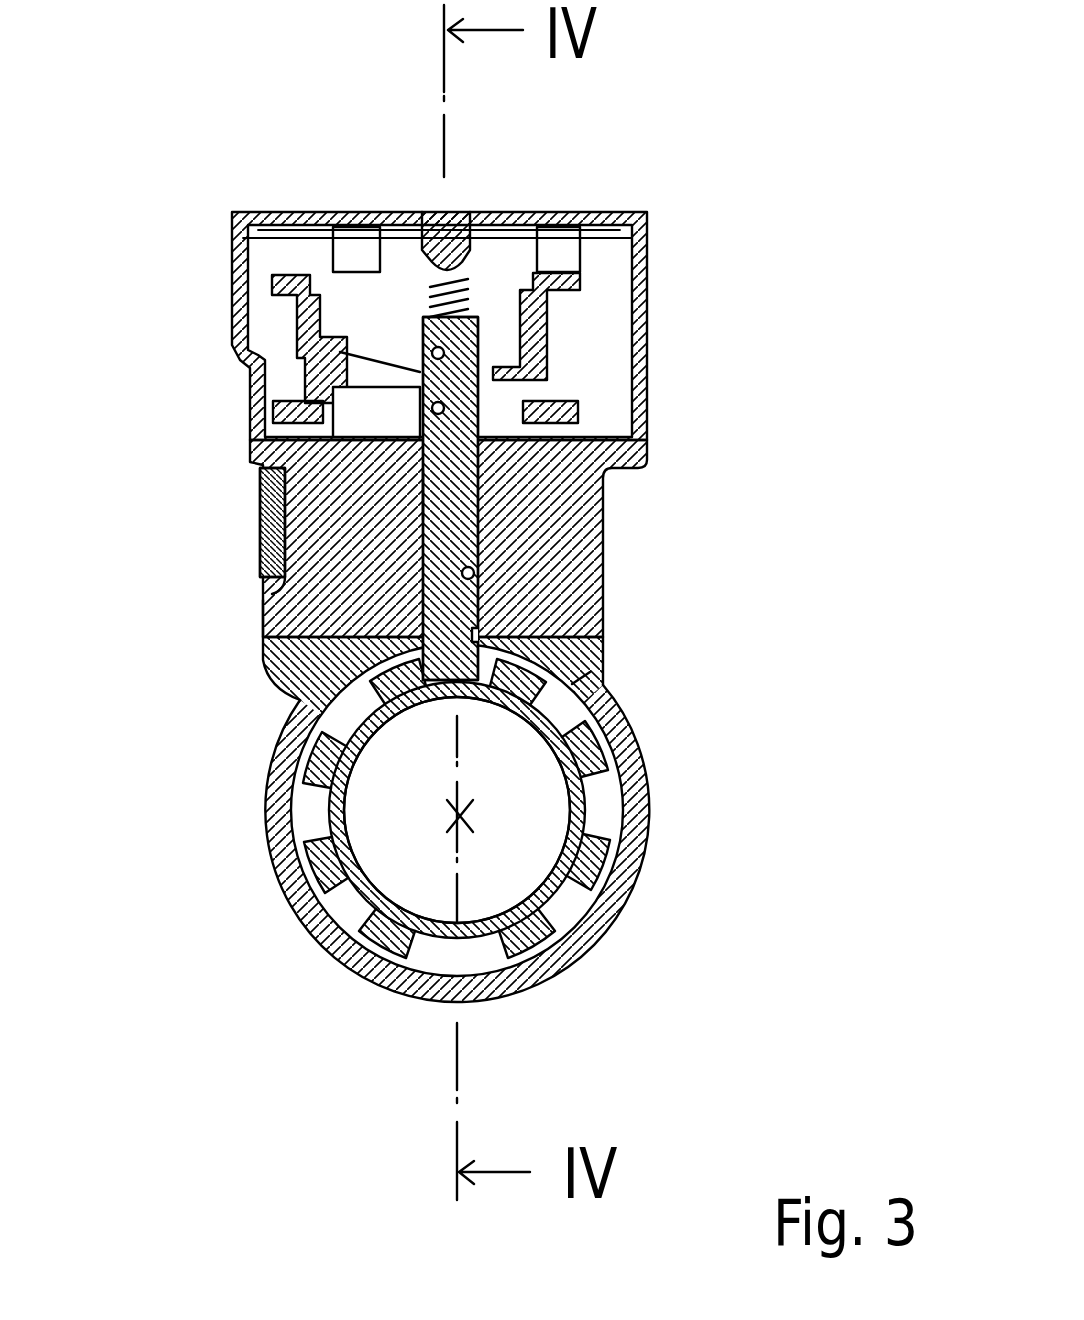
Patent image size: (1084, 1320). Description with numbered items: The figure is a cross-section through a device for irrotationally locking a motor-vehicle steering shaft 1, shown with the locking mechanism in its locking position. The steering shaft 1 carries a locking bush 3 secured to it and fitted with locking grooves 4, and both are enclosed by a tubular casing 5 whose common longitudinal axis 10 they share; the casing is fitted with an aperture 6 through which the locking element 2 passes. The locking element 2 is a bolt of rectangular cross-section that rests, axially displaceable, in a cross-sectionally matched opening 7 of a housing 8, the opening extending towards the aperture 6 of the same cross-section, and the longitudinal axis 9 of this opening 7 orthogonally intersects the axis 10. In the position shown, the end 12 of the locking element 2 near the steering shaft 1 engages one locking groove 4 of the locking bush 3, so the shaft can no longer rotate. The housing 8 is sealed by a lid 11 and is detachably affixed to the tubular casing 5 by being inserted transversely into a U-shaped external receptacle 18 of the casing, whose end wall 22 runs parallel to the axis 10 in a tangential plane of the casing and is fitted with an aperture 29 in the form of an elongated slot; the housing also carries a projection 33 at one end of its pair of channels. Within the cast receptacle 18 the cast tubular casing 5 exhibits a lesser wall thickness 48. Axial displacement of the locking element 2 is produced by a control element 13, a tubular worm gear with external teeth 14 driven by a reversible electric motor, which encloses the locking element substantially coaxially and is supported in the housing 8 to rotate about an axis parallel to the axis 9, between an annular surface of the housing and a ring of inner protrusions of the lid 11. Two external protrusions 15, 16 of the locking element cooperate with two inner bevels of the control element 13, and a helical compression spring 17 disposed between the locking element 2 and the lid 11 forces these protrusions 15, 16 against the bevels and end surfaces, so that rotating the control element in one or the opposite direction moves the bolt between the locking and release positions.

The steering shaft 1 is at (508, 862).
The locking element 2 is at (450, 493).
The locking bush 3 is at (590, 868).
The locking grooves 4 is at (597, 802).
The tubular casing 5 is at (273, 810).
The aperture 6 is at (477, 632).
The opening 7 is at (473, 583).
The housing 8 is at (550, 502).
The longitudinal axis 9 is at (470, 715).
The longitudinal axis 10 is at (458, 818).
The lid 11 is at (305, 222).
The end 12 is at (432, 690).
The control element 13 is at (538, 335).
The external teeth 14 is at (270, 417).
The external protrusion 15 is at (432, 353).
The external protrusion 16 is at (432, 408).
The helical compression spring 17 is at (478, 292).
The receptacle 18 is at (213, 543).
The end wall 22 is at (273, 497).
The aperture 29 is at (273, 593).
The projection 33 is at (272, 612).
The wall thickness 48 is at (580, 678).